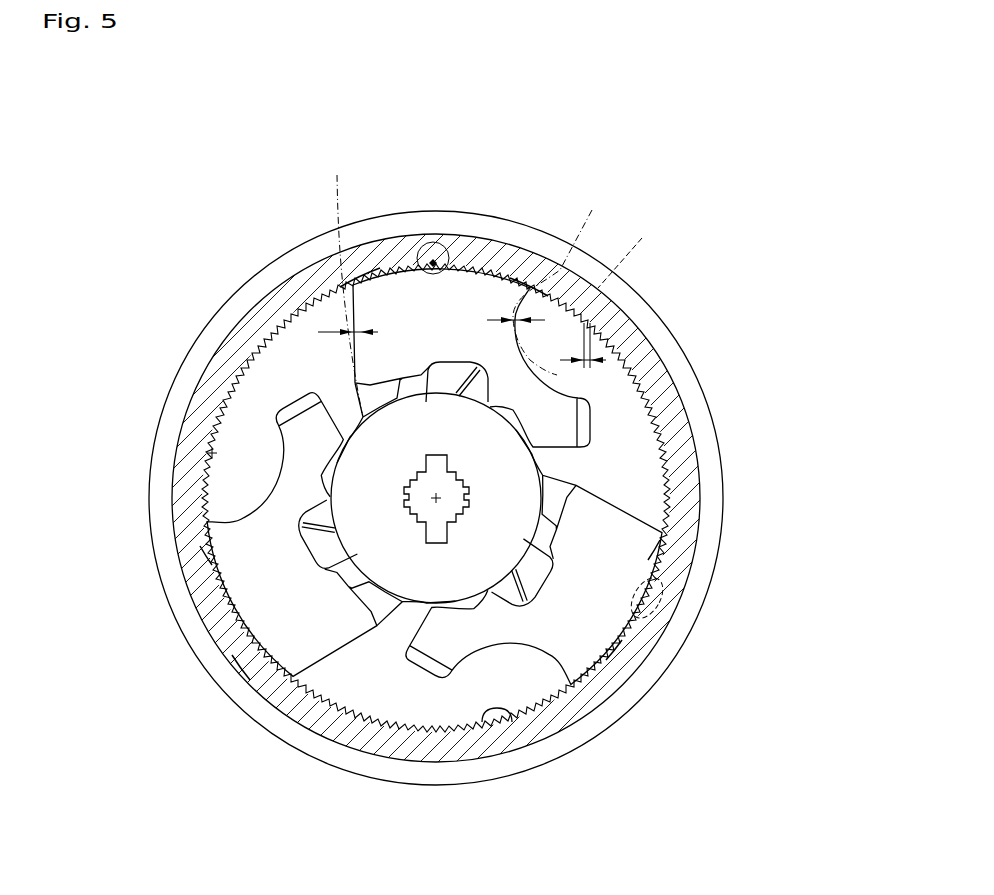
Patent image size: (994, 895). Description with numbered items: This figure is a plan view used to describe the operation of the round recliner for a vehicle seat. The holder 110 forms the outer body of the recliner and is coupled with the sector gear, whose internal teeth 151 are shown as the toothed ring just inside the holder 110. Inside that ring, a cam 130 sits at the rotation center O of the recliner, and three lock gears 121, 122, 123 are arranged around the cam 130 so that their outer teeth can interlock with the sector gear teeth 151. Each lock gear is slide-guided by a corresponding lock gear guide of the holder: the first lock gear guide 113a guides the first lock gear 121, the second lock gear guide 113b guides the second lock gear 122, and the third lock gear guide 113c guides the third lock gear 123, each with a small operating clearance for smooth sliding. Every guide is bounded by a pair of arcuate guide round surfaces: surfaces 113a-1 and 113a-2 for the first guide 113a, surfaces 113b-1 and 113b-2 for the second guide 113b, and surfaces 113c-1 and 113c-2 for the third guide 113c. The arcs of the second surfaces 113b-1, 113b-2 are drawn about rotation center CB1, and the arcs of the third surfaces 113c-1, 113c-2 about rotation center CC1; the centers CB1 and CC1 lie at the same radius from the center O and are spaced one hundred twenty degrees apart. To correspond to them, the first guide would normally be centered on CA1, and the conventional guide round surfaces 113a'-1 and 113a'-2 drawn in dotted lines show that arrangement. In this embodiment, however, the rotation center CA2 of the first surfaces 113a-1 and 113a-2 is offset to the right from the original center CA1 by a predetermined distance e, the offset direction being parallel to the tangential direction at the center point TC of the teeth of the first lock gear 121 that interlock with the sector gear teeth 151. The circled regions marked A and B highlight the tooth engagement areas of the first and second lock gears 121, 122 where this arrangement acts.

The holder 110 is at (245, 282).
The sector gear teeth 151 is at (313, 277).
The cam 130 is at (480, 434).
The first lock gear 121 is at (453, 330).
The second lock gear 122 is at (610, 582).
The third lock gear 123 is at (288, 594).
The first lock gear guide 113a is at (491, 128).
The guide round surface 113a-1 is at (378, 290).
The guide round surface 113a-2 is at (543, 290).
The conventional guide round surface 113a'-1 is at (340, 281).
The conventional guide round surface 113a'-2 is at (591, 280).
The second lock gear guide 113b is at (783, 627).
The guide round surface 113b-1 is at (652, 553).
The guide round surface 113b-2 is at (612, 655).
The third lock gear guide 113c is at (90, 610).
The guide round surface 113c-1 is at (237, 673).
The guide round surface 113c-2 is at (207, 555).
The original rotation center CA1 is at (638, 253).
The rotation center CA2 is at (603, 298).
The rotation center CB1 is at (481, 712).
The rotation center CC1 is at (208, 455).
The center point of teeth TC is at (433, 258).
The region A is at (438, 228).
The region B is at (634, 597).
The offset distance e is at (462, 335).
The rotation center of recliner O is at (441, 492).